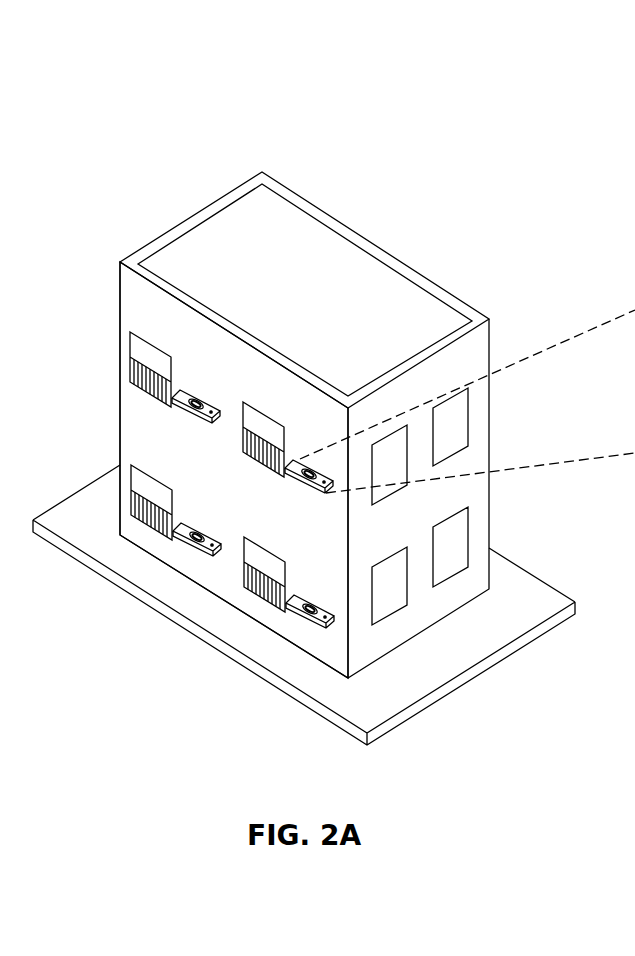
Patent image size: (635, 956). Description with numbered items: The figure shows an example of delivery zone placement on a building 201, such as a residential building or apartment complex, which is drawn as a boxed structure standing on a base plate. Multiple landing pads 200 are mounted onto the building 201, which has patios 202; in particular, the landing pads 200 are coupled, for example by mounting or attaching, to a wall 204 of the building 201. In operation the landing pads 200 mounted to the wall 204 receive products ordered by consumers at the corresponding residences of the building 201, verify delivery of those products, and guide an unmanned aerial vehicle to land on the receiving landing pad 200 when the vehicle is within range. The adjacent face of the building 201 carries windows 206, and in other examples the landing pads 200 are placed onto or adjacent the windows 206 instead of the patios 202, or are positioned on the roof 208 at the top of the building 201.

The landing pad 200 is at (200, 392).
The building 201 is at (195, 162).
The patio 202 is at (143, 338).
The wall 204 is at (223, 467).
The window 206 is at (468, 410).
The roof 208 is at (330, 307).